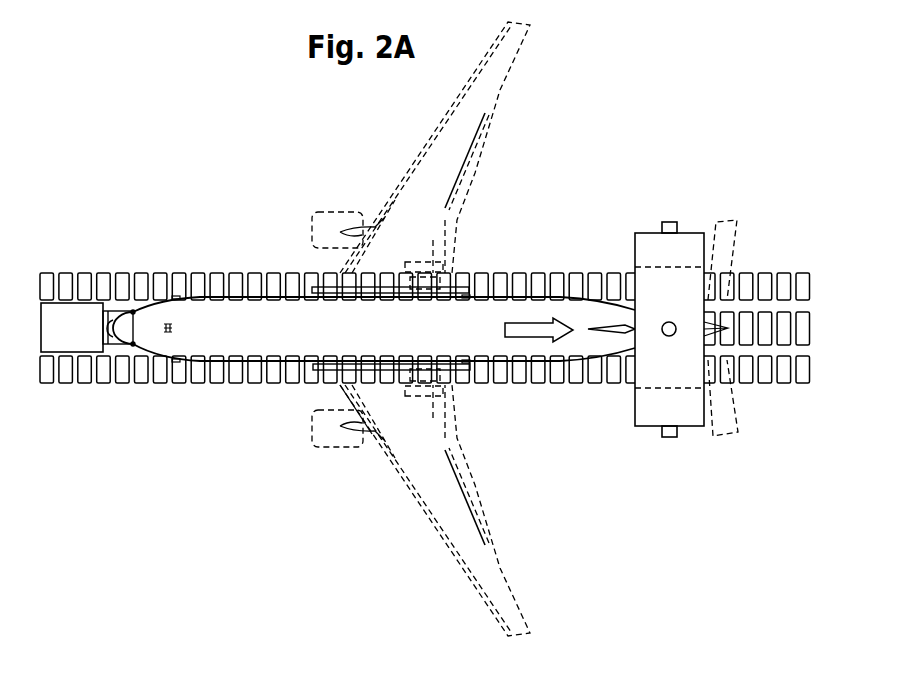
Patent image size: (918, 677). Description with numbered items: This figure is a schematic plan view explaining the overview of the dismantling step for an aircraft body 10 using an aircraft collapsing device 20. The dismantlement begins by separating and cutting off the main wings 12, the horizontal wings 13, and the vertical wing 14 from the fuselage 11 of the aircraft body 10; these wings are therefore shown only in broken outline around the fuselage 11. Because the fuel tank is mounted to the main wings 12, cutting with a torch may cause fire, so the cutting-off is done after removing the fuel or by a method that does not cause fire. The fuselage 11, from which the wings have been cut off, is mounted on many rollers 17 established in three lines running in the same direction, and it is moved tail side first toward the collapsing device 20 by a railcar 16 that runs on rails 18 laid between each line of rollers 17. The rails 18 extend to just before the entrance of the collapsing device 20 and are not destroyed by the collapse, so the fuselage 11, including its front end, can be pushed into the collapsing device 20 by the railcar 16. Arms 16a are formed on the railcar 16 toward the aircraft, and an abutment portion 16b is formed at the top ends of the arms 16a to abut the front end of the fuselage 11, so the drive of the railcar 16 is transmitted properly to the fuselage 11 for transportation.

The aircraft body 10 is at (290, 215).
The fuselage 11 is at (262, 327).
The main wings 12 is at (443, 490).
The horizontal wings 13 is at (718, 410).
The vertical wing 14 is at (624, 330).
The railcar 16 is at (72, 337).
The arms 16a is at (115, 312).
The abutment portion 16b is at (123, 335).
The rollers 17 is at (183, 378).
The rails 18 is at (45, 340).
The collapsing device 20 is at (693, 435).